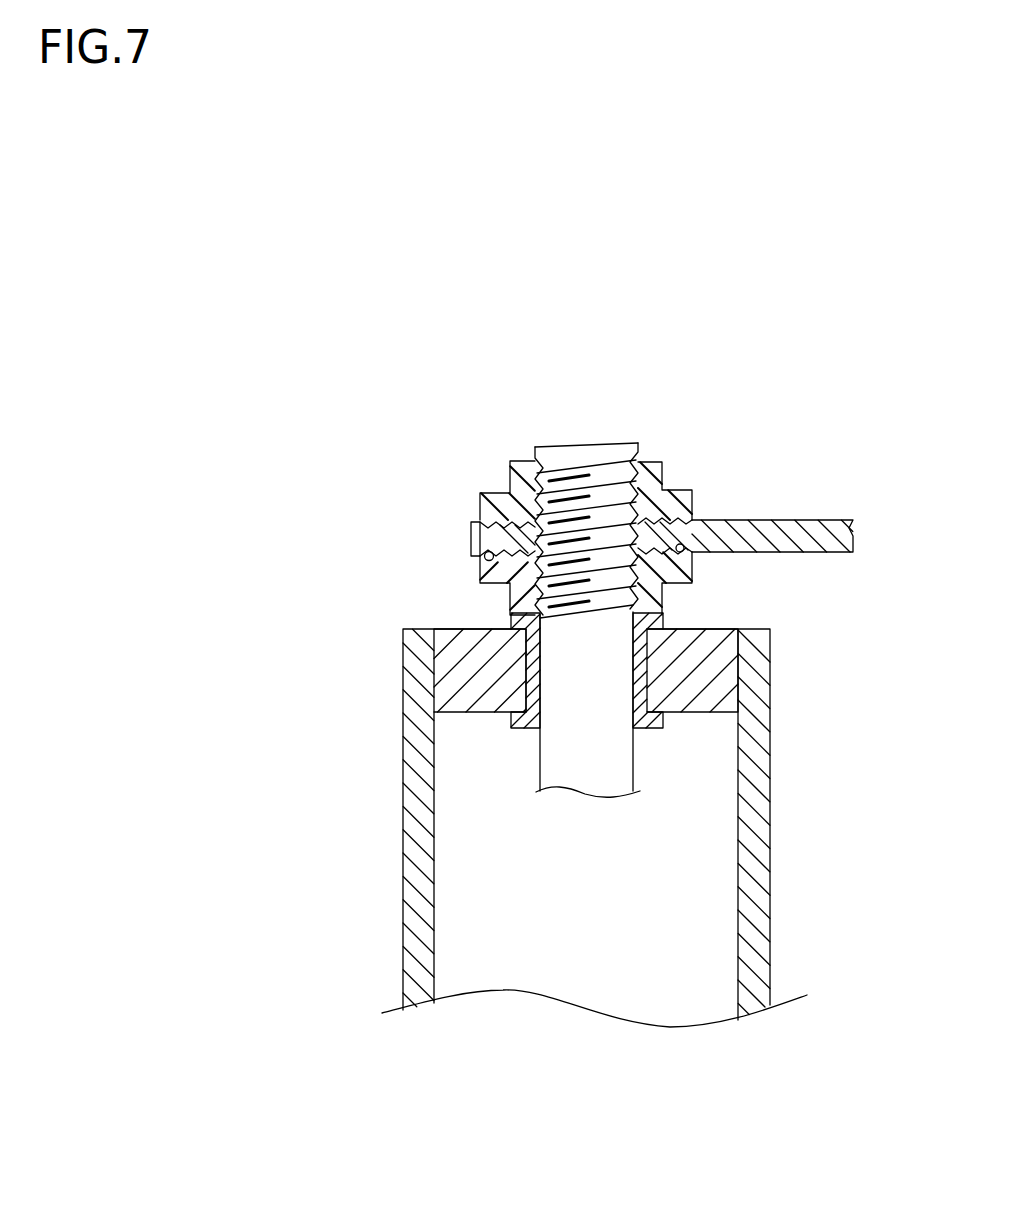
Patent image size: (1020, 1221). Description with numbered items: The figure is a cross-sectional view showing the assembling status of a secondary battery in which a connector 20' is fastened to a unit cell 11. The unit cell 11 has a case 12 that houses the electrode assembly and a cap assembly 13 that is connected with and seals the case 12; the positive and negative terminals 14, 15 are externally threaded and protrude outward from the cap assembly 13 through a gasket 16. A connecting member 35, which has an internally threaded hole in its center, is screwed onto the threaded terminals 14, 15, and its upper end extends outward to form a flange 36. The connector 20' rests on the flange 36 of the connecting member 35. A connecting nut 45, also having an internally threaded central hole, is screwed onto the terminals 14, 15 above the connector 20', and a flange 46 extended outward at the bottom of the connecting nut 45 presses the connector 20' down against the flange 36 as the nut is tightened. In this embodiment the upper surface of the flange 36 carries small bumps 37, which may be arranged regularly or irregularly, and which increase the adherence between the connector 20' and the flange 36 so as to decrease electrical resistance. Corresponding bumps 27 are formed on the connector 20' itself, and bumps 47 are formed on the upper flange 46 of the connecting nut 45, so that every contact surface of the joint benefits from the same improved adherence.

The unit cell 11 is at (800, 887).
The case 12 is at (418, 917).
The cap assembly 13 is at (405, 684).
The positive terminal 14 is at (603, 743).
The negative terminal 15 is at (711, 766).
The gasket 16 is at (508, 615).
The connector 20' is at (772, 504).
The bumps 27 is at (480, 532).
The connecting member 35 is at (522, 602).
The flange 36 is at (482, 556).
The bumps 37 is at (688, 552).
The connecting nut 45 is at (658, 480).
The flange 46 is at (696, 500).
The bumps 47 is at (490, 523).